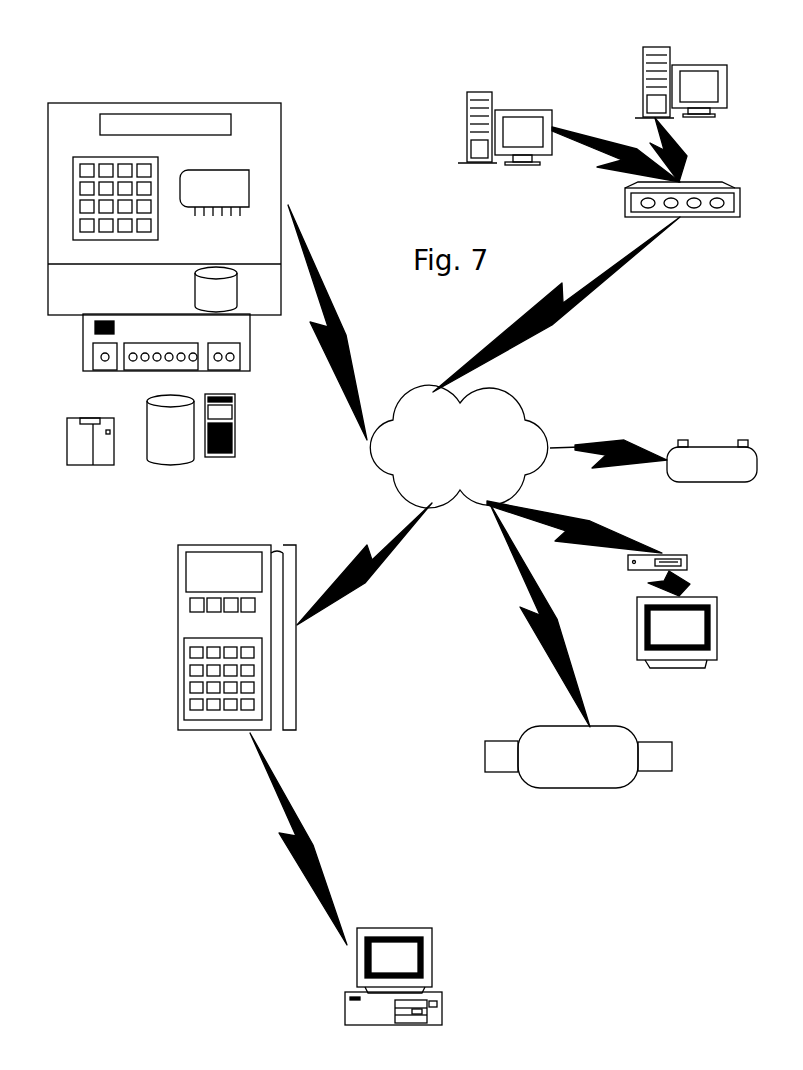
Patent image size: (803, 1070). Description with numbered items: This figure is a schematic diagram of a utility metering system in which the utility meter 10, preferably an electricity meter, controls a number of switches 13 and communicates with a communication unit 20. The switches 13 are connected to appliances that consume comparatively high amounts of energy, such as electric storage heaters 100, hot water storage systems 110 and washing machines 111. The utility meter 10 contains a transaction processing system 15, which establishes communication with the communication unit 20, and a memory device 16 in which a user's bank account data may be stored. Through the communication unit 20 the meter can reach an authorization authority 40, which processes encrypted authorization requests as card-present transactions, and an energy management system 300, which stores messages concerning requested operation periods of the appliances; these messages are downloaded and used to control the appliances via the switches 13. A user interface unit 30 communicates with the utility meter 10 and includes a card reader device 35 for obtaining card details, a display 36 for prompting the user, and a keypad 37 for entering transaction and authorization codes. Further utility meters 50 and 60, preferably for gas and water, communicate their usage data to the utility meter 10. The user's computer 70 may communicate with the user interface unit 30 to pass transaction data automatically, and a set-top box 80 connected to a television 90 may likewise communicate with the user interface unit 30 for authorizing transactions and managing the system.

The utility meter 10 is at (78, 272).
The switches 13 is at (190, 325).
The transaction processing system 15 is at (216, 194).
The memory device 16 is at (218, 290).
The communication unit 20 is at (703, 205).
The user interface unit 30 is at (283, 673).
The card reader device 35 is at (270, 685).
The display 36 is at (235, 578).
The keypad 37 is at (213, 690).
The authorization authority 40 is at (698, 82).
The further utility meter 50 is at (710, 456).
The further utility meter 60 is at (618, 757).
The computer 70 is at (402, 958).
The set-top box 80 is at (657, 560).
The television 90 is at (677, 632).
The electric storage heater 100 is at (220, 357).
The hot water storage system 110 is at (186, 357).
The washing machine 111 is at (131, 357).
The energy management system 300 is at (522, 128).